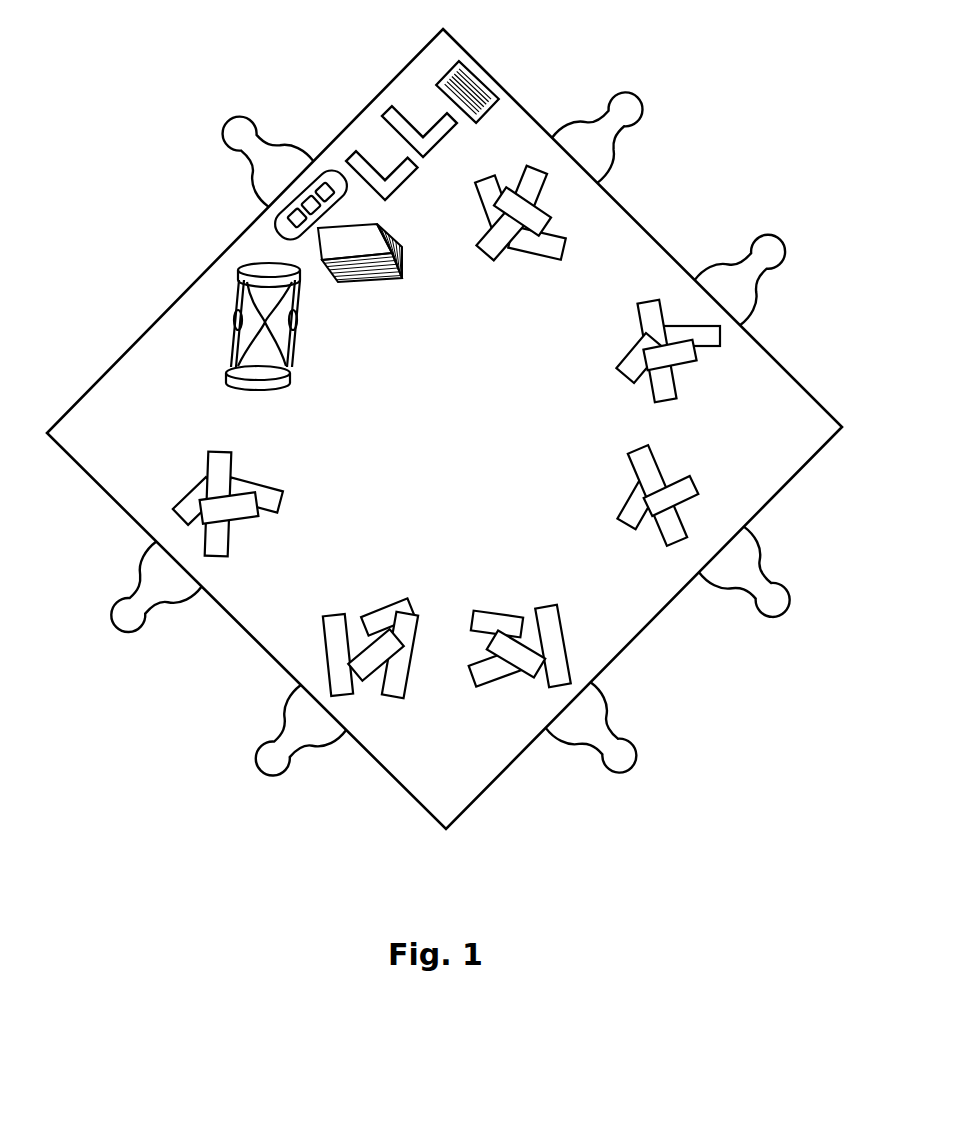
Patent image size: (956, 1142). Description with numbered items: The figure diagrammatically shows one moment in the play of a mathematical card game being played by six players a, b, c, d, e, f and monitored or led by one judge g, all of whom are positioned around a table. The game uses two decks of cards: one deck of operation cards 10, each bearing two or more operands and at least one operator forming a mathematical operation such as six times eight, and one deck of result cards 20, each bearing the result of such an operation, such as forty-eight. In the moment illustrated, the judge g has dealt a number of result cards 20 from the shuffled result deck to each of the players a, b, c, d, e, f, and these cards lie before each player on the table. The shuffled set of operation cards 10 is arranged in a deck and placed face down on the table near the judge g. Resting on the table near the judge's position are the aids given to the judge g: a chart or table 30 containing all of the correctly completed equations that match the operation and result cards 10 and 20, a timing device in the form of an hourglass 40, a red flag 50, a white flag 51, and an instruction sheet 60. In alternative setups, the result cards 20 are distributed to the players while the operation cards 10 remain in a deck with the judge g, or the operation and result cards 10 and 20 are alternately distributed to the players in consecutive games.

The operation cards 10 is at (349, 268).
The result cards 20 is at (502, 240).
The chart or table 30 is at (278, 224).
The hourglass 40 is at (257, 354).
The red flag 50 is at (392, 168).
The white flag 51 is at (433, 120).
The instruction sheet 60 is at (478, 80).
The player a is at (616, 88).
The player b is at (791, 260).
The player c is at (115, 608).
The player d is at (276, 783).
The player e is at (794, 588).
The player f is at (614, 772).
The judge g is at (250, 115).